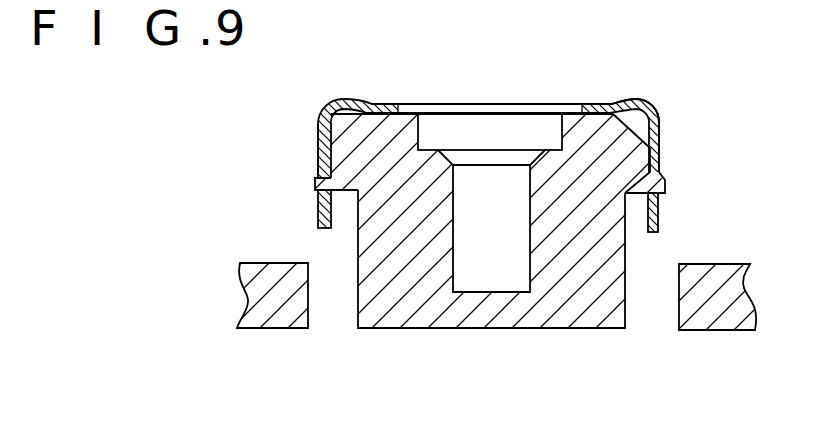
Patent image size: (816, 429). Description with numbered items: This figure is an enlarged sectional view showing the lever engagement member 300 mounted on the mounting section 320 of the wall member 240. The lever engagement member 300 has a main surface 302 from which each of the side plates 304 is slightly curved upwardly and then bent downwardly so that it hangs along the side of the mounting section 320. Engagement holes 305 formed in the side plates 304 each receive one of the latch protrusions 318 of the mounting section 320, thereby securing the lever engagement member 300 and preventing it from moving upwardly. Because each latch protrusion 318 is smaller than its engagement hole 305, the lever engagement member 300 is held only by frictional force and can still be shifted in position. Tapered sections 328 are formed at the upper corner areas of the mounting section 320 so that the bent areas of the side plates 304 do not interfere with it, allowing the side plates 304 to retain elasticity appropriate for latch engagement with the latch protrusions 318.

The wall member 240 is at (487, 244).
The lever engagement member 300 is at (496, 126).
The main surface 302 is at (398, 103).
The side plates 304 is at (658, 215).
The engagement holes 305 is at (658, 157).
The latch protrusions 318 is at (655, 187).
The mounting section 320 is at (633, 155).
The tapered sections 328 is at (642, 103).